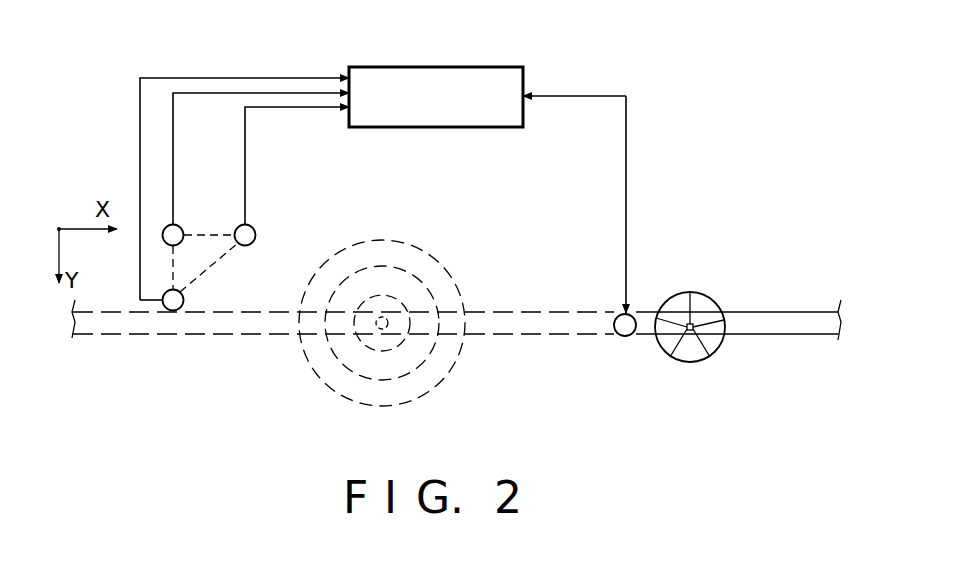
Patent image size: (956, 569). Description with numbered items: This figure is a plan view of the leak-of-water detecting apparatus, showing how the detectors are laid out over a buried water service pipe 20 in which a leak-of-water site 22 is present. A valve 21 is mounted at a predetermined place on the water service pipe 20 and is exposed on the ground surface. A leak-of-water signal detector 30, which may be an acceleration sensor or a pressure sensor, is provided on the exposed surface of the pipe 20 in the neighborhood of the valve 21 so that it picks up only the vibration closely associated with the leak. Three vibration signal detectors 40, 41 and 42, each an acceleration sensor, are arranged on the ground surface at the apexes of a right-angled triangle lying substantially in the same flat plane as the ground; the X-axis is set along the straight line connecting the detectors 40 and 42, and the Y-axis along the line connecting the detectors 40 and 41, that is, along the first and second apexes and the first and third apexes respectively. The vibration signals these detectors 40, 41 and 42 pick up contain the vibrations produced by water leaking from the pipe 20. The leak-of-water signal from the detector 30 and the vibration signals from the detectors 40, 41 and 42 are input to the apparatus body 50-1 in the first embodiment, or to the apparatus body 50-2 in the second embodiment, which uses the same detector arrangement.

The apparatus body 50-1 is at (418, 67).
The apparatus body 50-2 is at (436, 96).
The vibration signal detector 40 is at (180, 226).
The vibration signal detector 41 is at (184, 300).
The vibration signal detector 42 is at (252, 226).
The water service pipe 20 is at (510, 337).
The leak-of-water site 22 is at (387, 327).
The leak-of-water signal detector 30 is at (625, 337).
The valve 21 is at (718, 303).